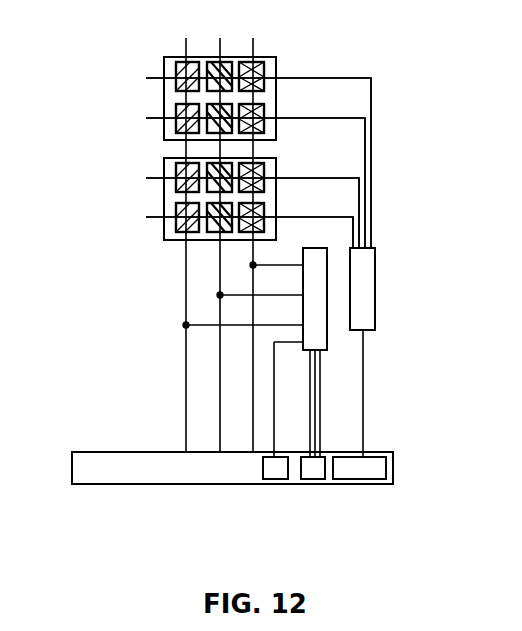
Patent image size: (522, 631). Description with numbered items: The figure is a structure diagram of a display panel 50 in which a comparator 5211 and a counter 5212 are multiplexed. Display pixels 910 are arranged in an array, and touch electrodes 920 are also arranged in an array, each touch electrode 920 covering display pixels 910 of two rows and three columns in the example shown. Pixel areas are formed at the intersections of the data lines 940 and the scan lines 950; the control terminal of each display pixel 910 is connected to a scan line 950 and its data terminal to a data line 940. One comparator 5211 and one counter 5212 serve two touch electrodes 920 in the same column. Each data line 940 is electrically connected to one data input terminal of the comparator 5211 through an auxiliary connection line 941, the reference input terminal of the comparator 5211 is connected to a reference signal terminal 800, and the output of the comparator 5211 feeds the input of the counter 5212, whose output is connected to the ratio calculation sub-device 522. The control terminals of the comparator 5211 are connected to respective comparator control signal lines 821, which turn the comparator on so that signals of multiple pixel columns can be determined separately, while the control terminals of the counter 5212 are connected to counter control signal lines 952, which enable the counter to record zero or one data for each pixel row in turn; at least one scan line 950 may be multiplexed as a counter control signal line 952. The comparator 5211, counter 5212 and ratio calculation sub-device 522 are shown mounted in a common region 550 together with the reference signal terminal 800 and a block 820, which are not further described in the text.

The display panel 50 is at (121, 71).
The display pixel 910 is at (255, 58).
The touch electrode 920 is at (276, 58).
The scan line 950 is at (146, 217).
The counter control signal line 952 is at (258, 163).
The data line 940 is at (186, 275).
The auxiliary connection line 941 is at (196, 326).
The comparator 5211 is at (327, 346).
The counter 5212 is at (375, 265).
The comparator control signal line 821 is at (310, 405).
The circuit board 550 is at (393, 465).
The reference signal terminal 800 is at (268, 480).
The control unit 820 is at (310, 480).
The ratio calculation sub-device 522 is at (372, 480).